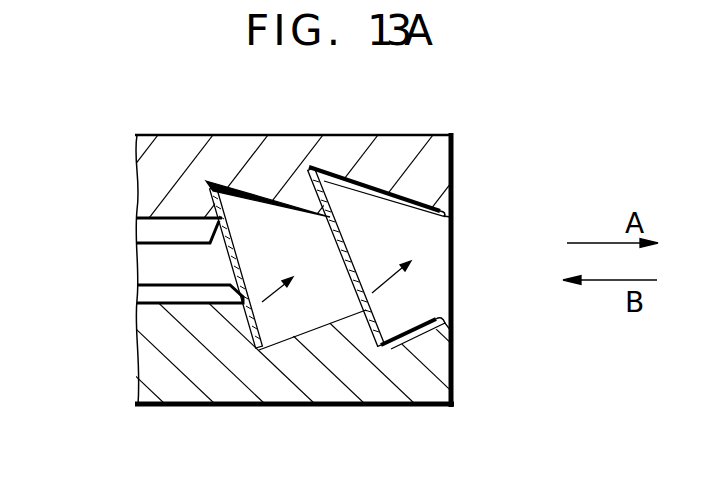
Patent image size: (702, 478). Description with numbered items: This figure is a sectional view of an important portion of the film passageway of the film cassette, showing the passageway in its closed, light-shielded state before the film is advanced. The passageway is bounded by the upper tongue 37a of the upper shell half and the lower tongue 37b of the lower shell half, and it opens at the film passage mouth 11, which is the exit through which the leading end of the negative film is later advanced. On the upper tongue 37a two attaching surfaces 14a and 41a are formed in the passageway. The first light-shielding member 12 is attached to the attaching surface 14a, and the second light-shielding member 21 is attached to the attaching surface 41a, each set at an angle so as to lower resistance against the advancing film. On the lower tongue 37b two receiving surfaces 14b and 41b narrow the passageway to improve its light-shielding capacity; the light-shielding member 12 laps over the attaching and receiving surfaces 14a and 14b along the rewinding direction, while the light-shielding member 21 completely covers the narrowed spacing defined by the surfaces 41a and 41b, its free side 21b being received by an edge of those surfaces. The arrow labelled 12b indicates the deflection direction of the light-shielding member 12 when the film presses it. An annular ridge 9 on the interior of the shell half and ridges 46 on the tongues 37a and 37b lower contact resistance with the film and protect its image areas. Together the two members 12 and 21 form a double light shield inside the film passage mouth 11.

The annular ridge 9 is at (166, 232).
The film passage mouth 11 is at (449, 260).
The light-shielding member 12 is at (244, 245).
The movement direction of contact piece 12 12b is at (307, 287).
The attaching surface 14a is at (218, 193).
The receiving surface 14b is at (255, 330).
The second light-shielding member 21 is at (357, 245).
The side of light-shielding member 21b is at (414, 283).
The upper tongue 37a is at (449, 152).
The lower tongue 37b is at (441, 381).
The attaching surface 41a is at (316, 193).
The receiving surface 41b is at (378, 338).
The ridge 46 is at (449, 217).